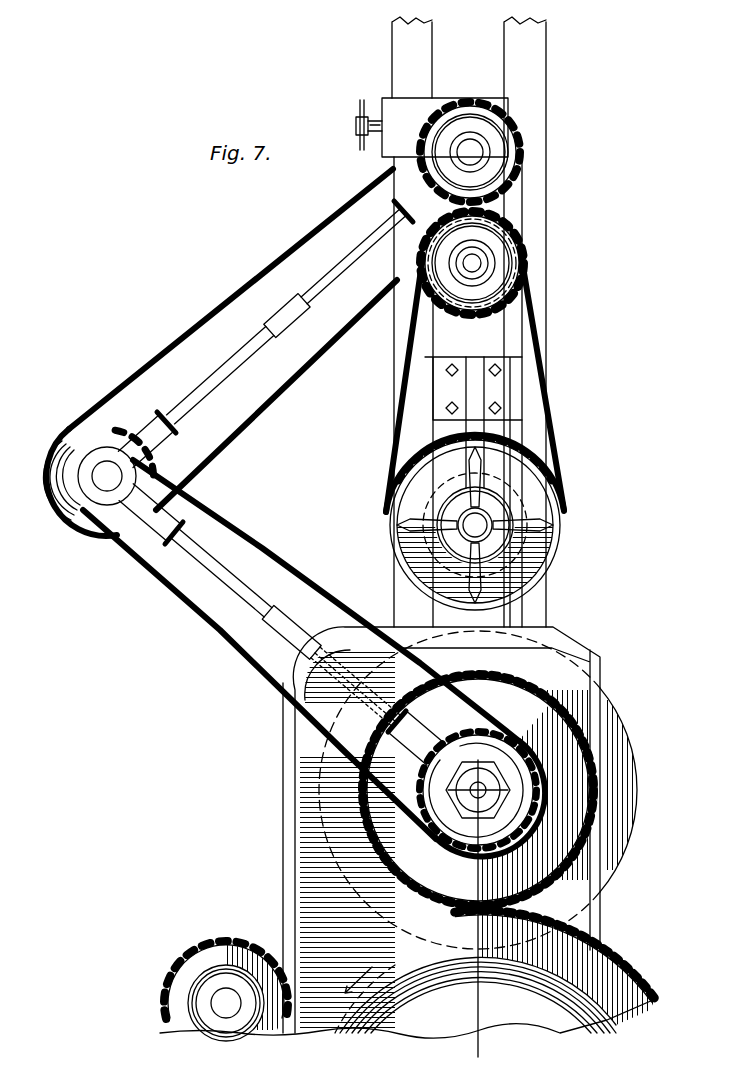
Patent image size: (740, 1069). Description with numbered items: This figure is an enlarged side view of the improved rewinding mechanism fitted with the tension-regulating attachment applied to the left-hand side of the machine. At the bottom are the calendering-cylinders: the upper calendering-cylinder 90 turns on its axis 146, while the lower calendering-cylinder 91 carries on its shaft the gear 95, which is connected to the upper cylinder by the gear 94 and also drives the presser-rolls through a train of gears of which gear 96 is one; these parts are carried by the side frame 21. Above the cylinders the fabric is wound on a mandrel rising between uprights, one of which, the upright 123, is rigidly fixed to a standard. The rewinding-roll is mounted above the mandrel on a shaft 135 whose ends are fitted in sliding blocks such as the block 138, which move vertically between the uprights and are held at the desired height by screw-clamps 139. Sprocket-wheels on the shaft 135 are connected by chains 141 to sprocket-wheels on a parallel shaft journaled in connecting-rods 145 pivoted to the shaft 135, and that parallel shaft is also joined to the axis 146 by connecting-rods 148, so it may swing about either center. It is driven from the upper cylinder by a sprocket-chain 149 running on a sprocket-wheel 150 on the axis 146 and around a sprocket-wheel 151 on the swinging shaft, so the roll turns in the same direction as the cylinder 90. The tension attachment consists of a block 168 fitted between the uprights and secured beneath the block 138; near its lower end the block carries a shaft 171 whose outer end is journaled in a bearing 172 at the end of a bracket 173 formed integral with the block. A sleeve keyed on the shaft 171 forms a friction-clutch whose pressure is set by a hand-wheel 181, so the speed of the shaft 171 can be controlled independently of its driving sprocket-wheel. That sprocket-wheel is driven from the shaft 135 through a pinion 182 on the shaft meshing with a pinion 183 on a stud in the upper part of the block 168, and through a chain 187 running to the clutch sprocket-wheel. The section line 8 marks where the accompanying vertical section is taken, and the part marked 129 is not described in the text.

The section line 8 is at (468, 100).
The side frame 21 is at (282, 860).
The upper calendering-cylinder 90 is at (623, 753).
The lower calendering-cylinder 91 is at (605, 995).
The gear 94 is at (490, 790).
The gear 95 is at (607, 957).
The gear 96 is at (163, 993).
The upright 123 is at (400, 370).
The frame member 129 is at (537, 212).
The shaft 135 is at (518, 152).
The sliding block 138 is at (393, 132).
The screw-clamp 139 is at (357, 110).
The chain 141 is at (297, 383).
The connecting-rod 145 is at (247, 353).
The axis 146 is at (490, 780).
The connecting-rod 148 is at (227, 587).
The sprocket-chain 149 is at (267, 550).
The sprocket-wheel 150 is at (375, 824).
The sprocket-wheel 151 is at (87, 457).
The block 168 is at (483, 334).
The shaft 171 is at (485, 523).
The bearing 172 is at (497, 517).
The bracket 173 is at (470, 422).
The hand-wheel 181 is at (552, 567).
The pinion 182 is at (512, 170).
The pinion 183 is at (527, 245).
The chain 187 is at (483, 383).